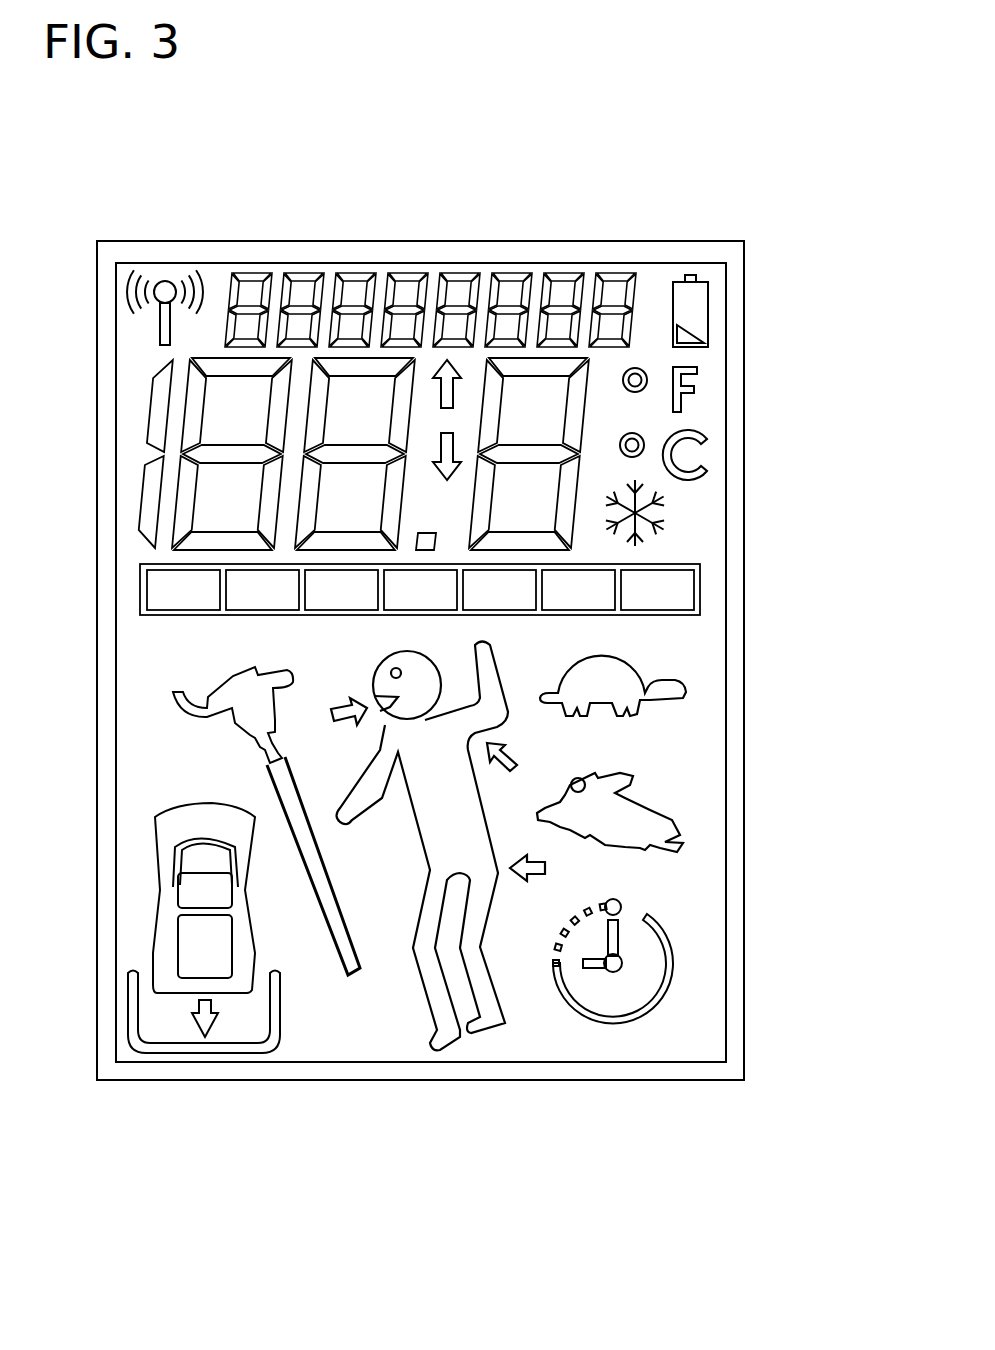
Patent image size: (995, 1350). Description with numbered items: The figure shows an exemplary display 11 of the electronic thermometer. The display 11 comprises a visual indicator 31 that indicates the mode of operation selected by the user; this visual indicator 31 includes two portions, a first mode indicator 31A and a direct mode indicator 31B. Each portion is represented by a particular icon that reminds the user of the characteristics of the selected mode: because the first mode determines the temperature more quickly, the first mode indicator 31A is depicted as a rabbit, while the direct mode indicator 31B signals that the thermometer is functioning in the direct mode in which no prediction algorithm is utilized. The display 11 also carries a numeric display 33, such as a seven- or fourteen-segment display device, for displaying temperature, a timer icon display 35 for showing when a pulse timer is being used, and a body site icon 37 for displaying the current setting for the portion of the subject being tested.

The display 11 is at (537, 183).
The numeric display 33 is at (75, 355).
The visual indicator 31 is at (828, 637).
The first mode indicator 31A is at (663, 800).
The direct mode indicator 31B is at (622, 682).
The timer icon display 35 is at (620, 1000).
The body site icon 37 is at (440, 845).